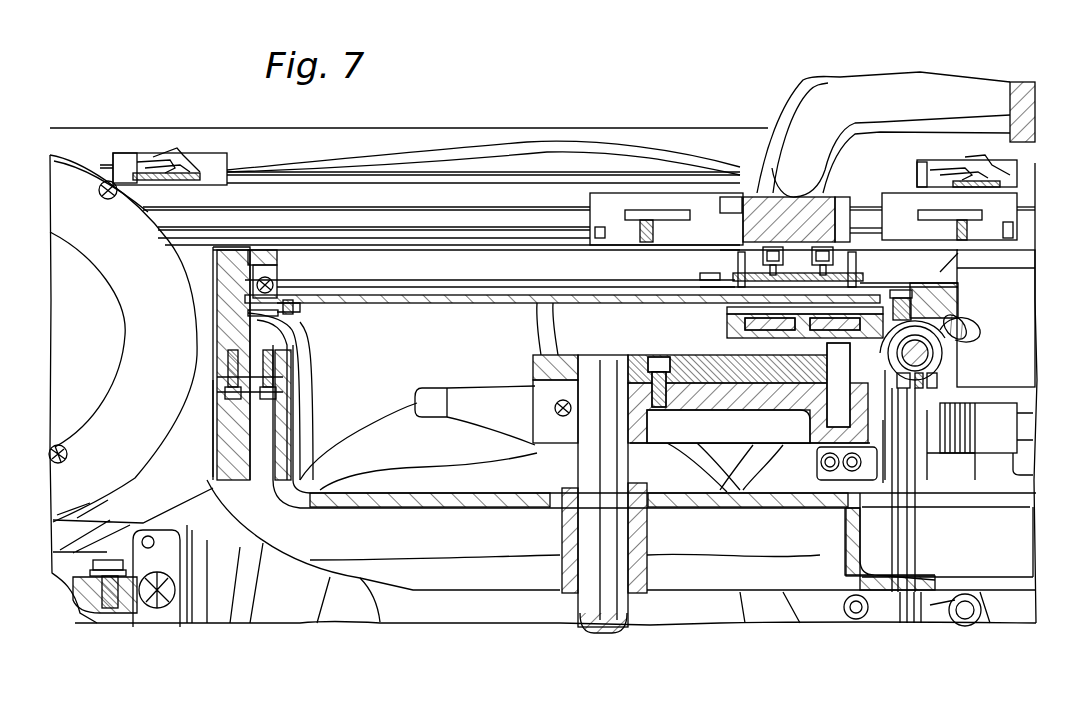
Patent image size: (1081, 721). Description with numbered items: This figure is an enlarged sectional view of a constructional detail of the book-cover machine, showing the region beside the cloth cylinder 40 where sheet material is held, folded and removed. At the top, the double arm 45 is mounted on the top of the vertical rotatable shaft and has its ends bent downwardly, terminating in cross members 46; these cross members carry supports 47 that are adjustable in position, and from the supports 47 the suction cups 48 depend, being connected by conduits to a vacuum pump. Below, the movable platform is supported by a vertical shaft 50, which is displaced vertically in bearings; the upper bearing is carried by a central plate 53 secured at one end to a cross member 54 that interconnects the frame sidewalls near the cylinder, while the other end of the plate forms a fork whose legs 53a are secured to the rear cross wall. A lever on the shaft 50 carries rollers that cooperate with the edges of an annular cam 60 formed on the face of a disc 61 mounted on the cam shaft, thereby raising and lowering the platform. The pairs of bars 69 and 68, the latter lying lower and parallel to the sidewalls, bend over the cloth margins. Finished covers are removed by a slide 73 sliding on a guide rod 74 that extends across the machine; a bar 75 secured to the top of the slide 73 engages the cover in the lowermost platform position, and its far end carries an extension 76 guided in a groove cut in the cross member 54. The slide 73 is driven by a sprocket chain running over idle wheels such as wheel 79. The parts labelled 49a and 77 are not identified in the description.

The cloth cylinder 40 is at (75, 160).
The double arm 45 is at (909, 86).
The cross members 46 is at (785, 236).
The supports 47 is at (836, 276).
The suction cups 48 is at (860, 288).
The support plate 49a is at (726, 322).
The vertical shaft 50 is at (590, 528).
The central plate 53 is at (362, 503).
The legs 53a is at (868, 538).
The cross member 54 is at (278, 343).
The annular cam 60 is at (248, 592).
The disc 61 is at (393, 407).
The bars 68 is at (487, 250).
The bars 69 is at (688, 200).
The slide 73 is at (920, 336).
The guide rod 74 is at (917, 353).
The bar 75 is at (606, 294).
The extension 76 is at (250, 315).
The bearing 77 is at (938, 378).
The idle wheel 79 is at (908, 415).